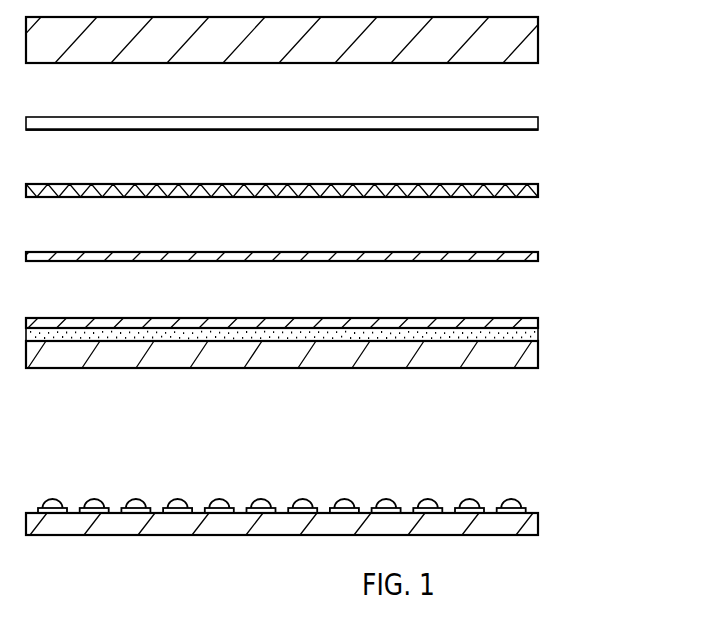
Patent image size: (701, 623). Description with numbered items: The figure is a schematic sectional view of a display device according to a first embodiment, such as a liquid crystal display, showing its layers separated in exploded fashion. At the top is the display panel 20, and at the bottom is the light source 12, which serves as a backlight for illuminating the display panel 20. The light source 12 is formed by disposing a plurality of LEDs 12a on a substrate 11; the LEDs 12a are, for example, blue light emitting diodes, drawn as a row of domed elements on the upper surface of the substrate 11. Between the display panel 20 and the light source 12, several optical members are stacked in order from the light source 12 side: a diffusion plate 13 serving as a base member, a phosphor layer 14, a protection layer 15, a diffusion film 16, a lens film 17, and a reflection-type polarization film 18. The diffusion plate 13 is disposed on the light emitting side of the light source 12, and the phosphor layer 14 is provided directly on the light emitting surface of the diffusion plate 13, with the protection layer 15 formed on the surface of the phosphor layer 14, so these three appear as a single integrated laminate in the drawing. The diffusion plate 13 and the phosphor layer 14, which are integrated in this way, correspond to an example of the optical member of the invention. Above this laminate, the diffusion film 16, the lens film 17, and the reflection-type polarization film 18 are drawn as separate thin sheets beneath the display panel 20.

The display panel 20 is at (539, 40).
The reflection-type polarization film 18 is at (539, 124).
The lens film 17 is at (539, 191).
The diffusion film 16 is at (539, 256).
The protection layer 15 is at (539, 322).
The phosphor layer 14 is at (539, 335).
The diffusion plate 13 is at (539, 355).
The light source 12 is at (344, 505).
The LEDs 12a is at (525, 497).
The substrate 11 is at (539, 522).